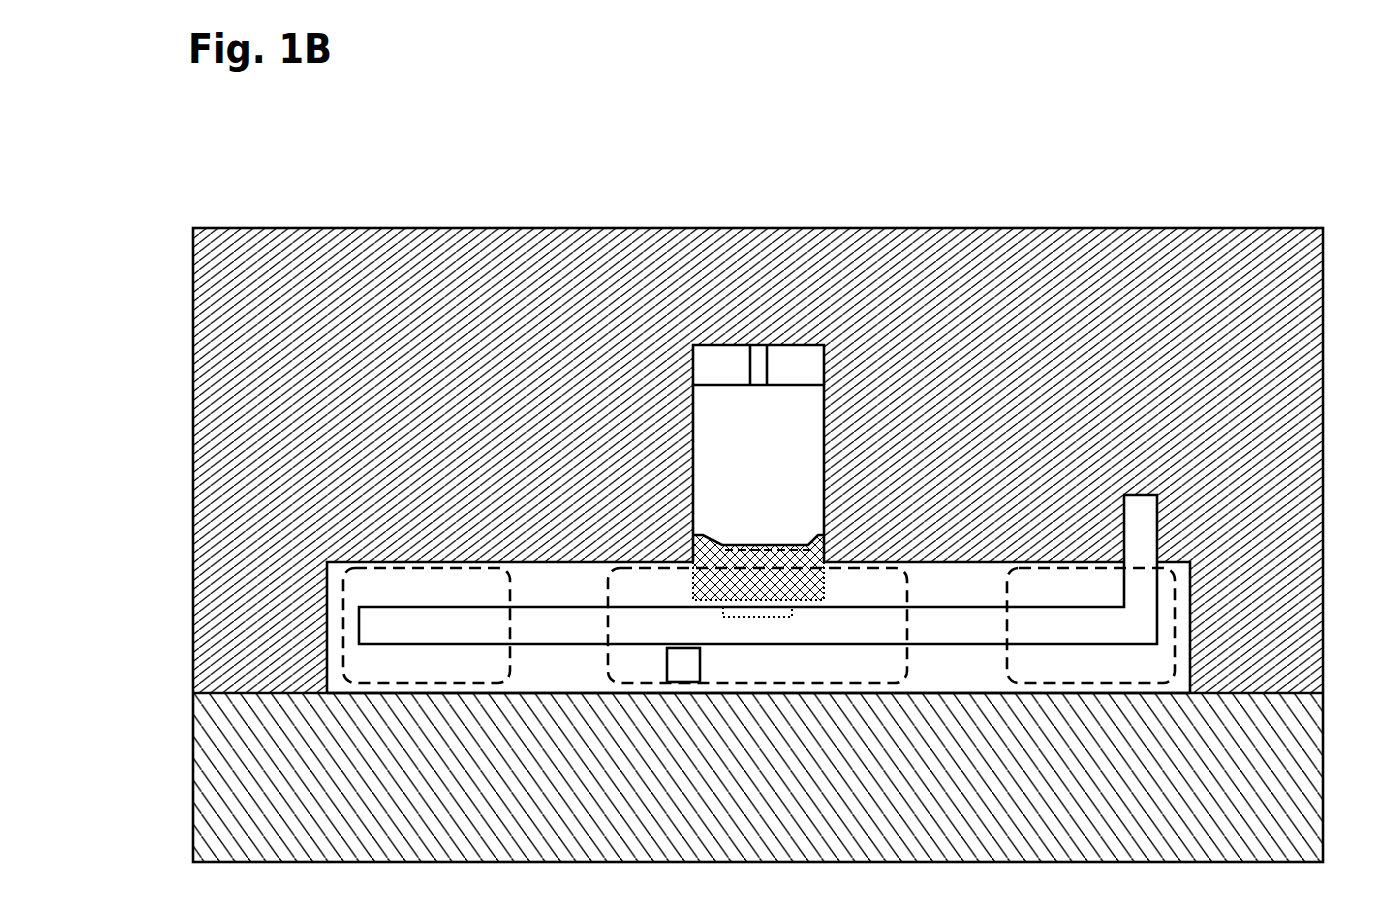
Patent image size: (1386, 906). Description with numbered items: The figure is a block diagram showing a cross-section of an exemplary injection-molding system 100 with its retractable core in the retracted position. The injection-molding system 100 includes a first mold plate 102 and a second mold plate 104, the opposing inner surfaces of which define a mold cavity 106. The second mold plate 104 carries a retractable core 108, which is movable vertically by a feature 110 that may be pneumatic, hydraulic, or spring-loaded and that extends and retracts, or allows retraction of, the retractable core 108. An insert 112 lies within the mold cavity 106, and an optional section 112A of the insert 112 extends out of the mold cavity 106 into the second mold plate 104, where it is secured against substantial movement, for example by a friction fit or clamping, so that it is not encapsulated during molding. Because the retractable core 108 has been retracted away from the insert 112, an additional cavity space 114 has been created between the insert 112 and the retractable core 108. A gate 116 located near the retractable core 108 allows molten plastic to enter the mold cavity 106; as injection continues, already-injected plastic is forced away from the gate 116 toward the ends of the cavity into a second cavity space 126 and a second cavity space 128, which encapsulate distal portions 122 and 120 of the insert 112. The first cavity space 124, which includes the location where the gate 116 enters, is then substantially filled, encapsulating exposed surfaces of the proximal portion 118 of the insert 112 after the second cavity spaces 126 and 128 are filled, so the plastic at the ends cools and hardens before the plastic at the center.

The injection-molding system 100 is at (1148, 185).
The first mold plate 102 is at (781, 862).
The second mold plate 104 is at (691, 228).
The mold cavity 106 is at (543, 582).
The retractable core 108 is at (758, 473).
The feature 110 is at (750, 347).
The insert 112 is at (922, 644).
The section of insert 112A is at (1140, 528).
The additional cavity space 114 is at (723, 565).
The gate 116 is at (667, 650).
The proximal portion of insert 118 is at (727, 627).
The distal portion of insert 120 is at (1050, 625).
The distal portion of insert 122 is at (426, 625).
The first cavity space 124 is at (835, 662).
The second cavity space 126 is at (1097, 595).
The second cavity space 128 is at (378, 588).